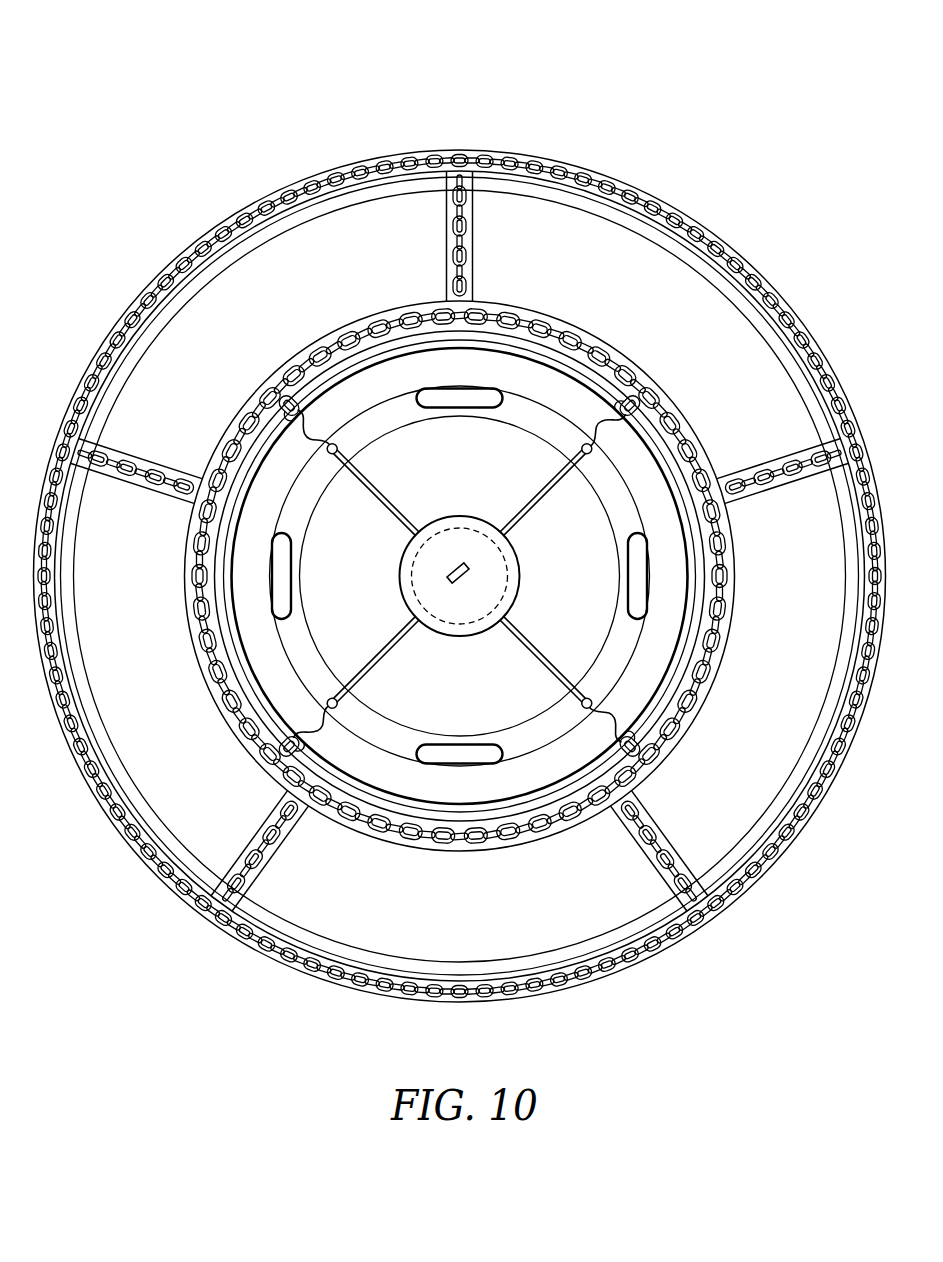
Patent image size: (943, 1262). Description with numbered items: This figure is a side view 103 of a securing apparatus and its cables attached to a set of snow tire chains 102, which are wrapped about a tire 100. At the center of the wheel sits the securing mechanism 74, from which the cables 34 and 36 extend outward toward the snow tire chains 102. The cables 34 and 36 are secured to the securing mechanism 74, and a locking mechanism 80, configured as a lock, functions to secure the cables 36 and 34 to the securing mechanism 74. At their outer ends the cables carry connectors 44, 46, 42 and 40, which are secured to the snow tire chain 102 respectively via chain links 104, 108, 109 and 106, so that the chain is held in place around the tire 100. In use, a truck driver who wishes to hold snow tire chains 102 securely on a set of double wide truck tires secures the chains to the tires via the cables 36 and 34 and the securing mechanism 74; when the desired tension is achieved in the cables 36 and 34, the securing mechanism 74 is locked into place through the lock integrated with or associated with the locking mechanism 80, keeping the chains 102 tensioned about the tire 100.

The tire 100 is at (378, 266).
The snow tire chains 102 is at (736, 242).
The side view 103 is at (475, 85).
The chain link 104 is at (320, 727).
The chain link 106 is at (320, 420).
The chain link 108 is at (611, 722).
The chain link 109 is at (600, 422).
The securing mechanism 74 is at (452, 508).
The locking mechanism 80 is at (470, 577).
The cable 34 is at (527, 513).
The cable 36 is at (373, 642).
The connector 40 is at (338, 454).
The connector 42 is at (576, 443).
The connector 44 is at (344, 705).
The connector 46 is at (575, 705).